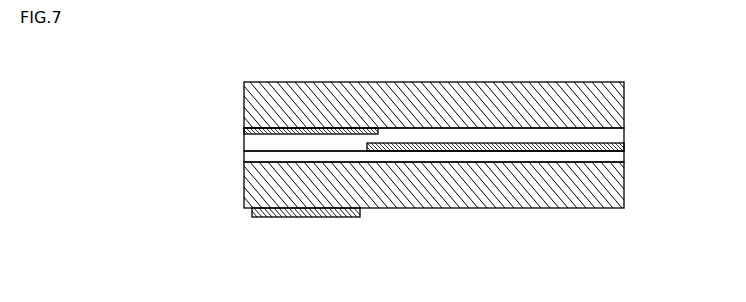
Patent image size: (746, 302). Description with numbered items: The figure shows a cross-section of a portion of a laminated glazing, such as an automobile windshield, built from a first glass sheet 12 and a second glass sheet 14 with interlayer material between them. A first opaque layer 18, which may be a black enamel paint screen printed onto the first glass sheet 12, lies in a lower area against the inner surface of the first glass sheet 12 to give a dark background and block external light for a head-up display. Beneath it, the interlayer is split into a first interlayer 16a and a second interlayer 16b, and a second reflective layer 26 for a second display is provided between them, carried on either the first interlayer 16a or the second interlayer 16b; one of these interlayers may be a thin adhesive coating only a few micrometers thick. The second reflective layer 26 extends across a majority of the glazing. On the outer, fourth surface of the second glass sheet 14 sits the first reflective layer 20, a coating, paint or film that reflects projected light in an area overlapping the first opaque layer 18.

The first glass sheet 12 is at (621, 102).
The second glass sheet 14 is at (620, 185).
The first interlayer 16a is at (620, 133).
The second interlayer 16b is at (618, 156).
The first opaque layer 18 is at (308, 128).
The first reflective layer 20 is at (310, 217).
The second reflective layer 26 is at (498, 145).